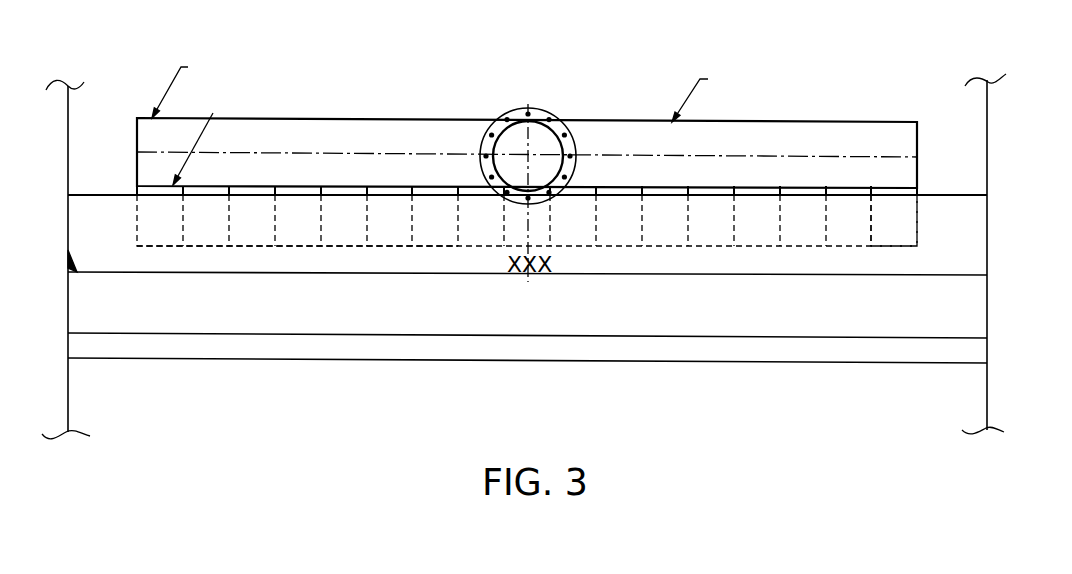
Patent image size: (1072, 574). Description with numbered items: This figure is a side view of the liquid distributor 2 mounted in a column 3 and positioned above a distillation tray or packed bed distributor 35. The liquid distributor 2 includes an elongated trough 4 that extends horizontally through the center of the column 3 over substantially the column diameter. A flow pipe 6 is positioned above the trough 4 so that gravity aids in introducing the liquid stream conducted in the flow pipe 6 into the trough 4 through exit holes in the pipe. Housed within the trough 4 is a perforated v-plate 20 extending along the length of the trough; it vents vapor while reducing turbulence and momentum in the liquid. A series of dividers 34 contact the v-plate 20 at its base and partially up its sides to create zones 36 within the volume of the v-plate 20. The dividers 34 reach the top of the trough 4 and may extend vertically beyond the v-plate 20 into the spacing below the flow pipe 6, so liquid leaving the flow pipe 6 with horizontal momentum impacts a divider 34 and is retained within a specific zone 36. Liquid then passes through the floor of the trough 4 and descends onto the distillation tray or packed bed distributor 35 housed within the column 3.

The liquid distributor 2 is at (1000, 157).
The column 3 is at (988, 125).
The trough 4 is at (990, 258).
The flow pipe 6 is at (575, 122).
The perforated v-plate 20 is at (917, 220).
The dividers 34 is at (828, 245).
The distillation tray or packed bed distributor 35 is at (752, 355).
The zones 36 is at (396, 252).